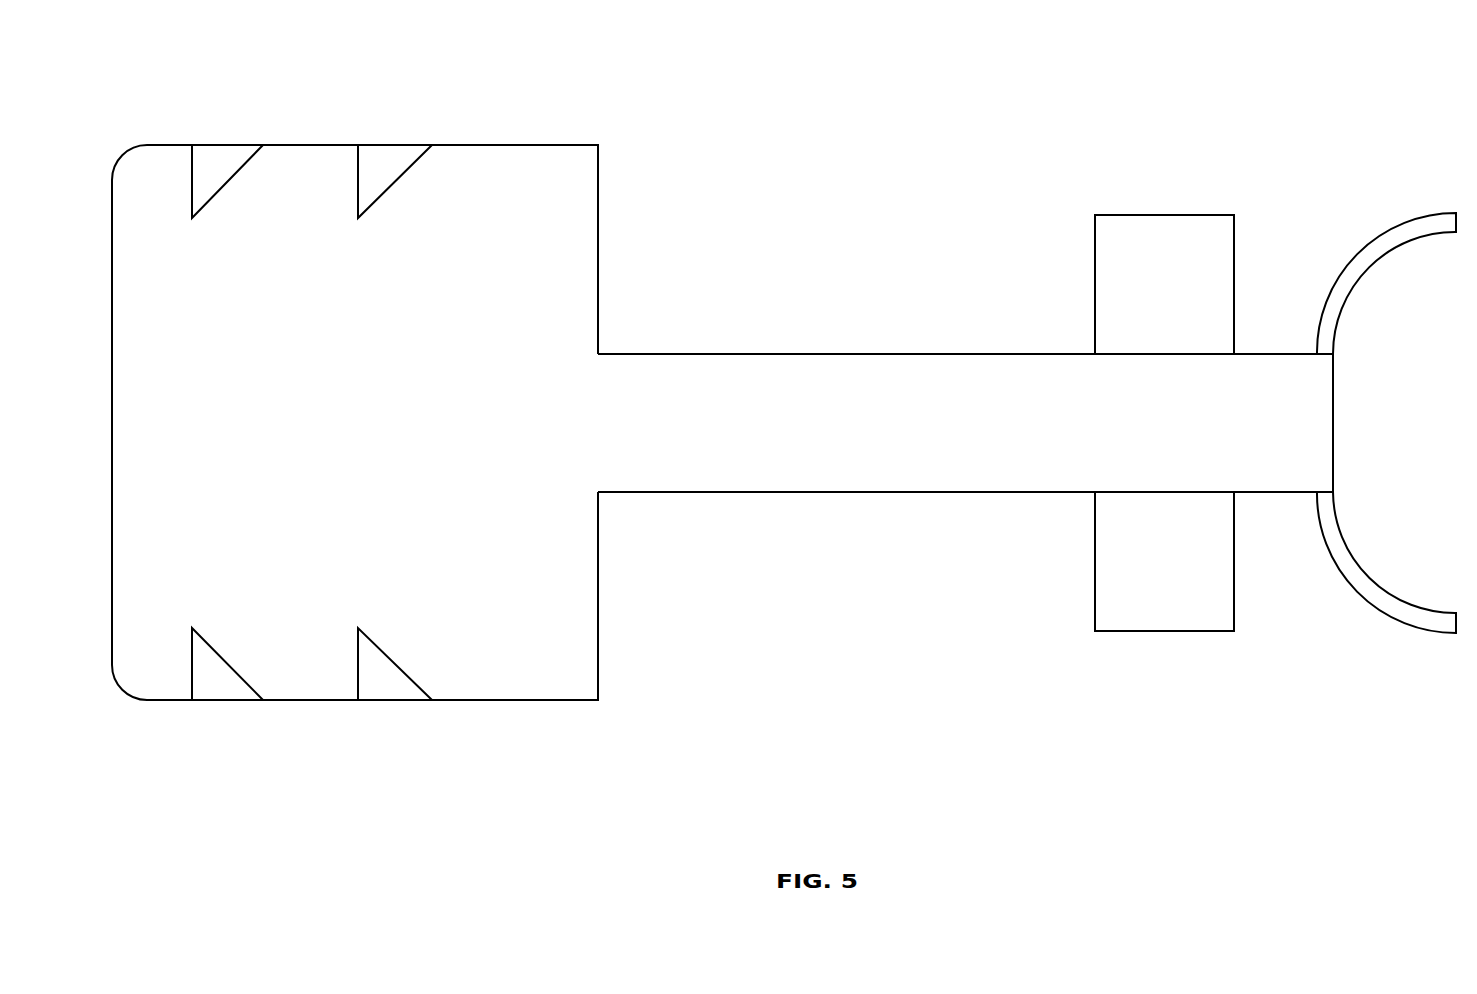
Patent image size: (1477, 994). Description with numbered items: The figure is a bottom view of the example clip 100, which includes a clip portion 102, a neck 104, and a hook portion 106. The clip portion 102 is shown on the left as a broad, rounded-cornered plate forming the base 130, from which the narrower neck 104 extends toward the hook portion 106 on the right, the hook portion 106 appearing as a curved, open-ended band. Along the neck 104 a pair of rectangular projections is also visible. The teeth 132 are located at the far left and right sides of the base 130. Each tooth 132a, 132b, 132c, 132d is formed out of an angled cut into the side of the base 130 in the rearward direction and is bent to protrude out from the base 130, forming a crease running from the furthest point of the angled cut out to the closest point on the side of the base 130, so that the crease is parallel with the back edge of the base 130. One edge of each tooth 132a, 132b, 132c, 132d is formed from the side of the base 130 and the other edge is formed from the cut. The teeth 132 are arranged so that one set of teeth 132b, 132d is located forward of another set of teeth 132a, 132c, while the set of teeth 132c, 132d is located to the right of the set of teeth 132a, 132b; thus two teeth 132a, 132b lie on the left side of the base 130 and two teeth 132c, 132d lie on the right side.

The clip 100 is at (1268, 834).
The clip portion 102 is at (677, 193).
The neck 104 is at (867, 301).
The hook portion 106 is at (1289, 185).
The base 130 is at (452, 447).
The teeth 132 is at (500, 63).
The tooth 132a is at (220, 672).
The tooth 132b is at (388, 672).
The tooth 132c is at (232, 158).
The tooth 132d is at (387, 172).